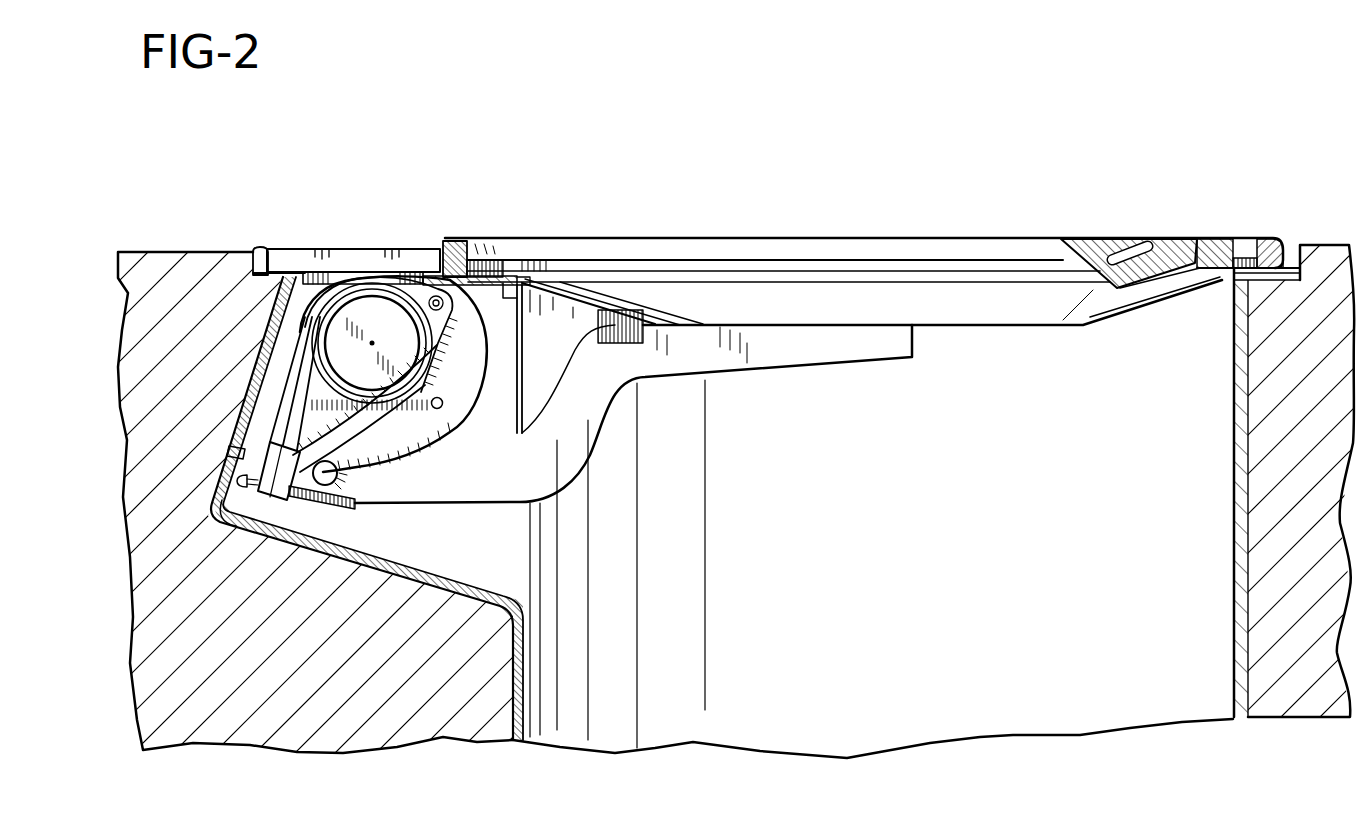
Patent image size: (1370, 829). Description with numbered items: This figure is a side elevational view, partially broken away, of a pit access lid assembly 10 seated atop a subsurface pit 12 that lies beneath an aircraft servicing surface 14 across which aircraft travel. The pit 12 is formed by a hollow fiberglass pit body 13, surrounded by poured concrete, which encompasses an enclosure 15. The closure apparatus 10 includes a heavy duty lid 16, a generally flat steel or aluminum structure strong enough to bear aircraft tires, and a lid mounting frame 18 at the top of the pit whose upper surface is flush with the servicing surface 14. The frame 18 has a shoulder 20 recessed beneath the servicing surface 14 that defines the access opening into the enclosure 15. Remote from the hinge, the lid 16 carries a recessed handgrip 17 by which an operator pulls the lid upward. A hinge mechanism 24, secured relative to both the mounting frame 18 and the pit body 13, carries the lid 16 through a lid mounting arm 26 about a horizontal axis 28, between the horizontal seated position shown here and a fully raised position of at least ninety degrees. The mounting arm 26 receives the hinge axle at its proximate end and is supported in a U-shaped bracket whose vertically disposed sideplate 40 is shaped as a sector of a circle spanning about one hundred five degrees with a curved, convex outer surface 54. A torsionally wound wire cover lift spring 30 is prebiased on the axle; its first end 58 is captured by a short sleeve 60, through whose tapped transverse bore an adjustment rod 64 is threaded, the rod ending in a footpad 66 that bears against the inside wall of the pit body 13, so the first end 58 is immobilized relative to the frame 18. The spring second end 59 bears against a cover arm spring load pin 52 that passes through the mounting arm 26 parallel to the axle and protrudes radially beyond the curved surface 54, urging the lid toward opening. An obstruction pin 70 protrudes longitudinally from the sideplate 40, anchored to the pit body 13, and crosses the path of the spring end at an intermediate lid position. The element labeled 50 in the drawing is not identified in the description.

The access lid assembly 10 is at (912, 200).
The subsurface pit 12 is at (1260, 643).
The hollow pit body 13 is at (436, 596).
The aircraft servicing surface 14 is at (1300, 243).
The enclosure 15 is at (1022, 684).
The heavy duty lid 16 is at (1036, 236).
The handgrip 17 is at (1168, 255).
The lid mounting frame 18 is at (246, 263).
The shoulder 20 is at (1238, 256).
The hinge mechanism 24 is at (371, 285).
The lid mounting arm 26 is at (575, 427).
The horizontal axis 28 is at (370, 344).
The cover lift spring 30 is at (300, 326).
The sideplate 40 is at (503, 278).
The mounting bar 50 is at (293, 249).
The cover arm spring load pin 52 is at (338, 480).
The curved outer surface 54 is at (512, 352).
The first end 58 is at (288, 402).
The second end 59 is at (365, 452).
The sleeve 60 is at (268, 498).
The adjustment rod 64 is at (343, 510).
The footpad 66 is at (233, 497).
The obstruction pin 70 is at (445, 401).